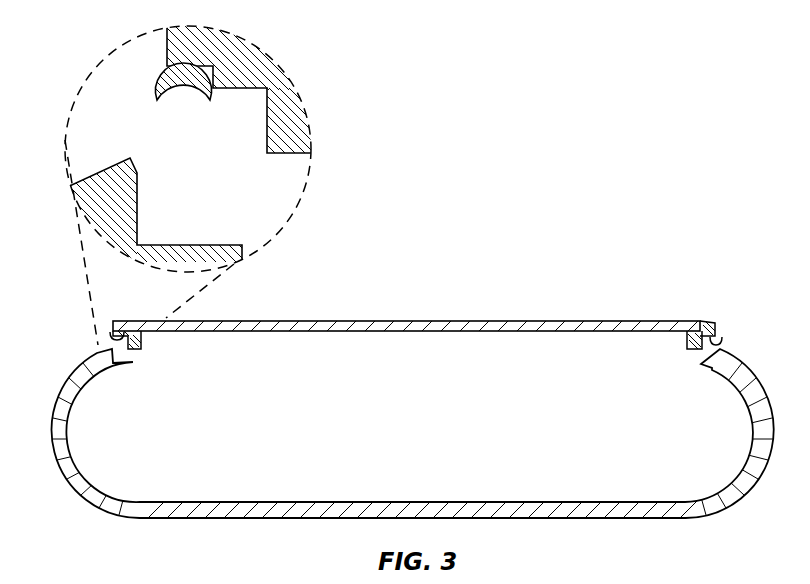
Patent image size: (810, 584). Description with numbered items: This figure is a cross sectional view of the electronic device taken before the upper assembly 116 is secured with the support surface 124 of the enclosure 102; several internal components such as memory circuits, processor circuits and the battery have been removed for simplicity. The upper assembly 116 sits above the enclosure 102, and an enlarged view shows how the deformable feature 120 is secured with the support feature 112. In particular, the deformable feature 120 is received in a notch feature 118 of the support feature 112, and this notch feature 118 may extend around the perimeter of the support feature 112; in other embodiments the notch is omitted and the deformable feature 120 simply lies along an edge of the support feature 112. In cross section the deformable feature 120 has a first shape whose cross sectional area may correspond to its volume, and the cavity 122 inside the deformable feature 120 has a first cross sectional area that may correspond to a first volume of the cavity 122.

The enclosure 102 is at (72, 384).
The support feature 112 is at (294, 153).
The upper assembly 116 is at (567, 298).
The notch feature 118 is at (198, 68).
The deformable feature 120 is at (160, 69).
The cavity 122 is at (170, 118).
The support surface 124 is at (195, 244).